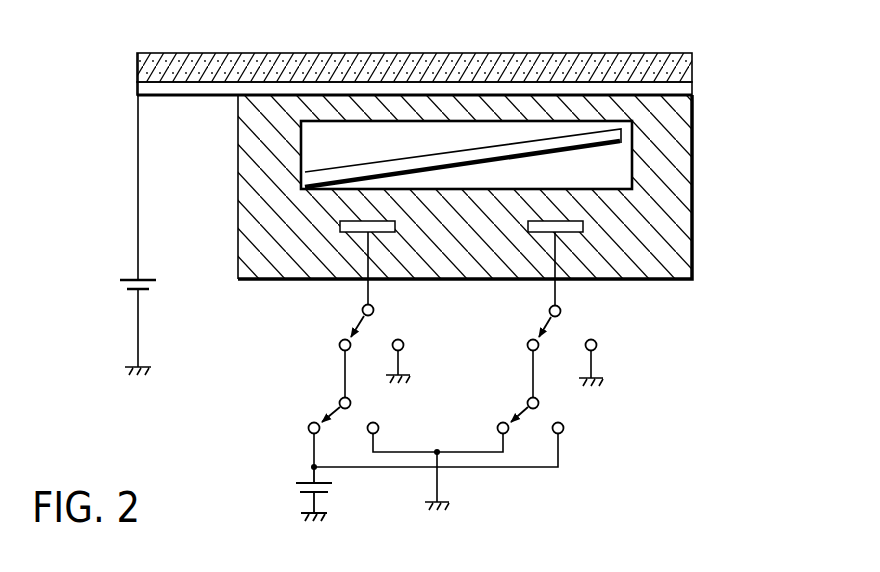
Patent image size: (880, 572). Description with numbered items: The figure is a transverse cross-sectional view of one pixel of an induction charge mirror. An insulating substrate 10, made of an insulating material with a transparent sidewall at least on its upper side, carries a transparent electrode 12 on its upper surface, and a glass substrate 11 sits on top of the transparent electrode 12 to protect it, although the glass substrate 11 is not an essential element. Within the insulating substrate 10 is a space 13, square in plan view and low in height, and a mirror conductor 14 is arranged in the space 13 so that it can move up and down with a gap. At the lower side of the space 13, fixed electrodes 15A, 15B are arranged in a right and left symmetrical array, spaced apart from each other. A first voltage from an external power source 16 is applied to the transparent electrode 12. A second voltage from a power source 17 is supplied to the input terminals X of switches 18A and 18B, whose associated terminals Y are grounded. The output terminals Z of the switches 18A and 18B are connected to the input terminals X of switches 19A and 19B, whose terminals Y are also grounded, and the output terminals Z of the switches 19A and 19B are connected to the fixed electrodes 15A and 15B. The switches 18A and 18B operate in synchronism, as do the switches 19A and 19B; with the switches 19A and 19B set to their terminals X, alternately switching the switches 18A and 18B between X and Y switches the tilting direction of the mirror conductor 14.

The insulating substrate 10 is at (693, 128).
The glass substrate 11 is at (693, 60).
The transparent electrode 12 is at (693, 91).
The space 13 is at (610, 155).
The mirror conductor 14 is at (514, 143).
The fixed electrode 15A is at (340, 225).
The fixed electrode 15B is at (583, 226).
The external power source 16 is at (120, 300).
The power source 17 is at (292, 495).
The switch 18A is at (322, 405).
The switch 18B is at (543, 413).
The switch 19A is at (352, 318).
The switch 19B is at (557, 325).